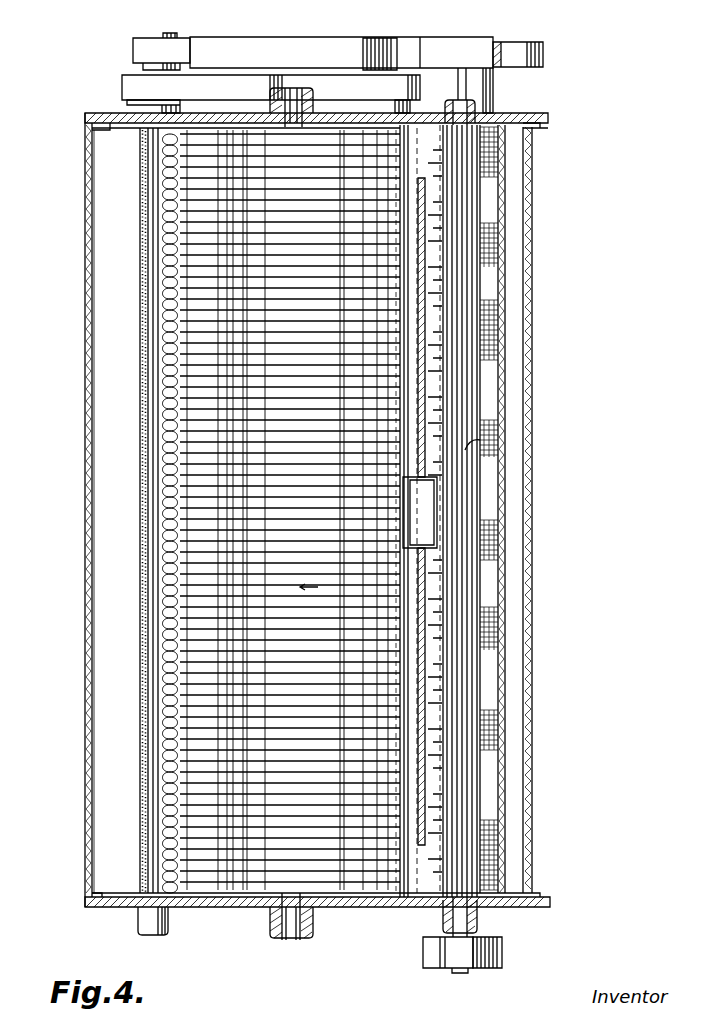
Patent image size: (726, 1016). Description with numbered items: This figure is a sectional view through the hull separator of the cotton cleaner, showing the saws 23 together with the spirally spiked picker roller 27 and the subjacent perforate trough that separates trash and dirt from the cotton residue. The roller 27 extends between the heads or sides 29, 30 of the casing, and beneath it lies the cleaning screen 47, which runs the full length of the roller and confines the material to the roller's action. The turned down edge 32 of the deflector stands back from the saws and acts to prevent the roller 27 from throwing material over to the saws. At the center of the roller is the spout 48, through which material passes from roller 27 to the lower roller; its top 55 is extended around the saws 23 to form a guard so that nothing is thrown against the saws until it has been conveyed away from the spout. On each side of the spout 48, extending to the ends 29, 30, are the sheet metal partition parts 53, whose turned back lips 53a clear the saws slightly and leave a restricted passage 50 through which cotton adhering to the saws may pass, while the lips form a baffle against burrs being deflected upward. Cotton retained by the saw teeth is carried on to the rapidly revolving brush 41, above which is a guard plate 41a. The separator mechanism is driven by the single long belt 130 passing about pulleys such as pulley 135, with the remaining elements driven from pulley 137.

The saws 23 is at (334, 875).
The spiral picker roller 27 is at (463, 257).
The head or side of the casing 29 is at (223, 897).
The head or side of the casing 30 is at (525, 118).
The turned down edge of deflector 32 is at (425, 220).
The brush 41 is at (160, 605).
The guard plate 41a is at (117, 440).
The cleaning screen 47 is at (493, 732).
The spout 48 is at (420, 512).
The passage 50 is at (402, 127).
The sheet metal partition 53 is at (427, 130).
The turned back lip 53a is at (396, 890).
The top of the spout 55 is at (422, 512).
The long belt 130 is at (502, 952).
The pulley 135 is at (433, 943).
The pulley 137 is at (362, 65).